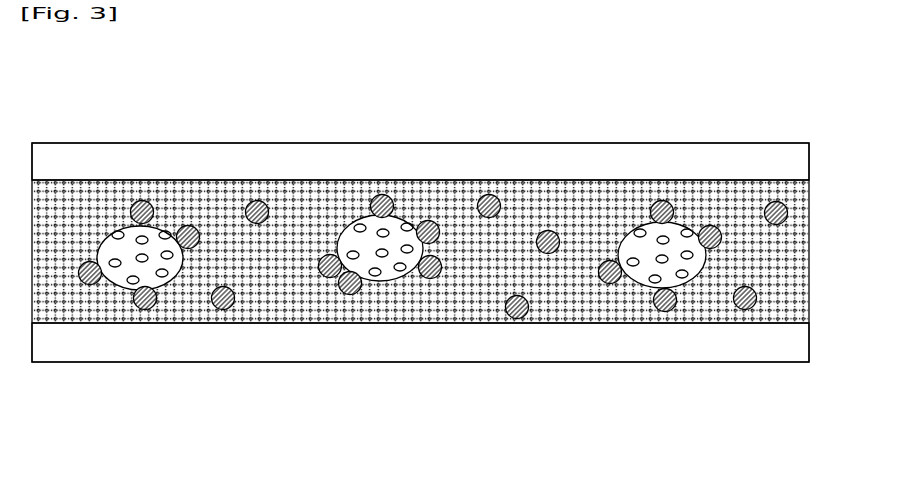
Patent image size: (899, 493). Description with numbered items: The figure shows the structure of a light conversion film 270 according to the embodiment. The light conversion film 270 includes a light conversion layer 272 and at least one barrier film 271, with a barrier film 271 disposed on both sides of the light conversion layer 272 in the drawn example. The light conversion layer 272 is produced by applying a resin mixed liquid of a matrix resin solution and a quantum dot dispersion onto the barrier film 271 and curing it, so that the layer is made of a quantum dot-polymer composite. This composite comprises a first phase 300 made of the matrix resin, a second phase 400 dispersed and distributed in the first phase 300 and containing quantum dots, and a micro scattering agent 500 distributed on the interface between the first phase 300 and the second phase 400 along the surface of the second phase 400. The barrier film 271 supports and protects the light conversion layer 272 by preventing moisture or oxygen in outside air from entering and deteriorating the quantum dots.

The light conversion film 270 is at (90, 88).
The barrier film 271 is at (798, 161).
The light conversion layer 272 is at (760, 435).
The first phase 300 is at (705, 300).
The second phase 400 is at (630, 288).
The micro scattering agent 500 is at (745, 310).